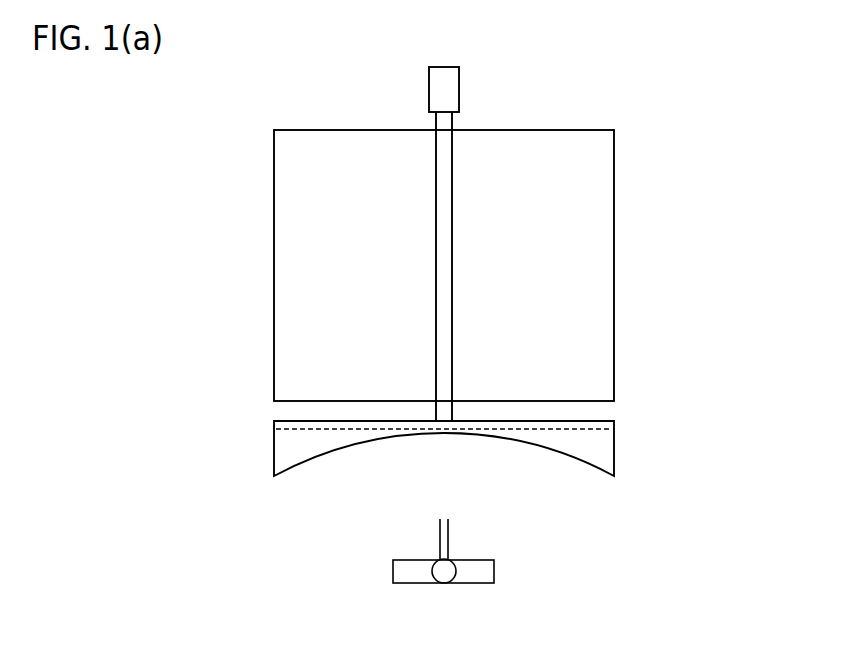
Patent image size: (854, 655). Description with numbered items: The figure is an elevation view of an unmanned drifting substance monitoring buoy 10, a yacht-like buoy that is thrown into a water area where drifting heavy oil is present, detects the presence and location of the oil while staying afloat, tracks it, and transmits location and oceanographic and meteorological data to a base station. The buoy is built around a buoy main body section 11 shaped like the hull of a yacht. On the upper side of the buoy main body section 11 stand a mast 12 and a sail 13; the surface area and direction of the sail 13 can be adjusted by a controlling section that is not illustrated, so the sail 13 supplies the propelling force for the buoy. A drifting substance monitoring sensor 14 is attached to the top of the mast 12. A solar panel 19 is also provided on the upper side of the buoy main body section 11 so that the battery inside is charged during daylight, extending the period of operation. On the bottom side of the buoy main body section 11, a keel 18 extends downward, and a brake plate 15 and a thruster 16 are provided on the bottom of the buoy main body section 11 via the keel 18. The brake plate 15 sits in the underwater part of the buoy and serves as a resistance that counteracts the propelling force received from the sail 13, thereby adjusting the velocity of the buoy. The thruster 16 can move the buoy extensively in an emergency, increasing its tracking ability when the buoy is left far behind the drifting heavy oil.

The unmanned drifting substance monitoring buoy 10 is at (670, 168).
The buoy main body section 11 is at (615, 457).
The mast 12 is at (452, 190).
The sail 13 is at (614, 263).
The drifting substance monitoring sensor 14 is at (459, 88).
The brake plate 15 is at (494, 571).
The thruster 16 is at (443, 583).
The keel 18 is at (450, 539).
The solar panel 19 is at (595, 417).